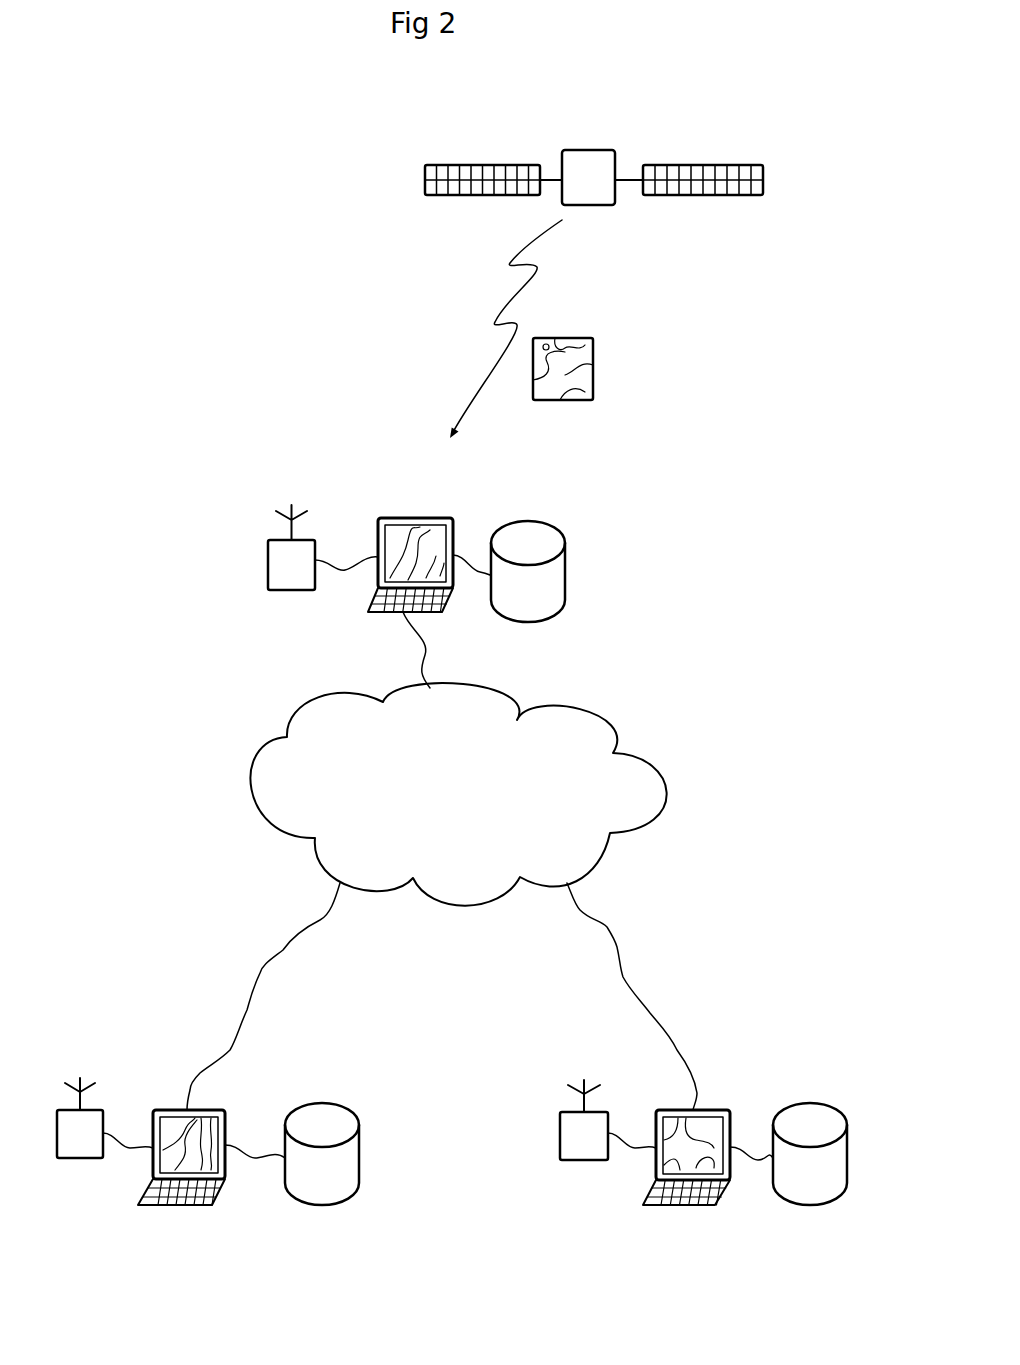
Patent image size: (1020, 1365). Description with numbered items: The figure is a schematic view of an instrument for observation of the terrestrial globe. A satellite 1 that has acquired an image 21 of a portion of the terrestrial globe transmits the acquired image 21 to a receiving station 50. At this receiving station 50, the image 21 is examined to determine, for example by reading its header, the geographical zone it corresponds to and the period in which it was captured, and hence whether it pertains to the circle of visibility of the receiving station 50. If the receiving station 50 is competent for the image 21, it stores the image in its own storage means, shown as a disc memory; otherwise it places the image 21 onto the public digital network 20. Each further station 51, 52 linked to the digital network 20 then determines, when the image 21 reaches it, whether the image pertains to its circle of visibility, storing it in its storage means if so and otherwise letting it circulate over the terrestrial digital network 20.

The satellite 1 is at (597, 160).
The image 21 is at (583, 365).
The receiving station 50 is at (432, 535).
The public digital network 20 is at (633, 793).
The receiving station 51 is at (195, 1193).
The receiving station 52 is at (712, 1205).